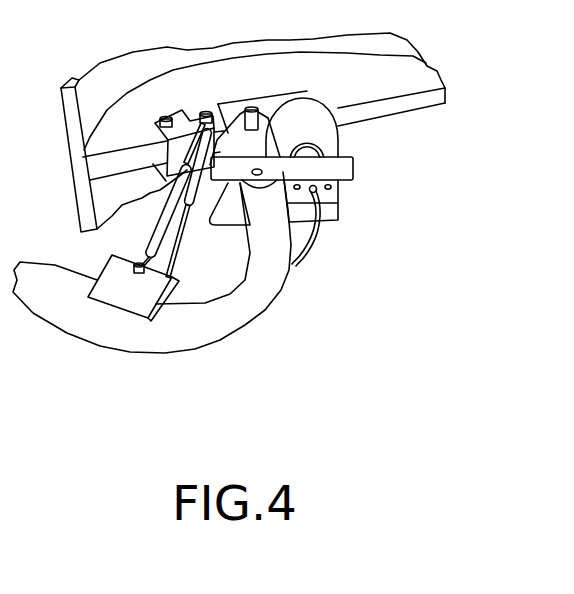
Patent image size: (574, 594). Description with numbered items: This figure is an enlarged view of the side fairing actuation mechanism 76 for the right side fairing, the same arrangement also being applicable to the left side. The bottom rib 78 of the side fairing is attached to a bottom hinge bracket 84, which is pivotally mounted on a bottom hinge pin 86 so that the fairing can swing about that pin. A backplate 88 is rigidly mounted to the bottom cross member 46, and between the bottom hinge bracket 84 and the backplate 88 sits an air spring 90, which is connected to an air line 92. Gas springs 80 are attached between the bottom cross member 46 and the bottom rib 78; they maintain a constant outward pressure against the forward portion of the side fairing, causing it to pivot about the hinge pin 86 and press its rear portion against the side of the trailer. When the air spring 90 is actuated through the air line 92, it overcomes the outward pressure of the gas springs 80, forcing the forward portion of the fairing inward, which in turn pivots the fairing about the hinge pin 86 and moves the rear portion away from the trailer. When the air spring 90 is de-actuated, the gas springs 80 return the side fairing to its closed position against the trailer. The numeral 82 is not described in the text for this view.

The bottom cross member 46 is at (247, 332).
The side fairing actuation mechanism 76 is at (130, 355).
The bottom rib 78 is at (440, 78).
The gas springs 80 is at (170, 203).
The plate top surface 82 is at (202, 72).
The bottom hinge bracket 84 is at (290, 100).
The bottom hinge pin 86 is at (252, 107).
The backplate 88 is at (340, 213).
The air spring 90 is at (329, 143).
The air line 92 is at (308, 245).